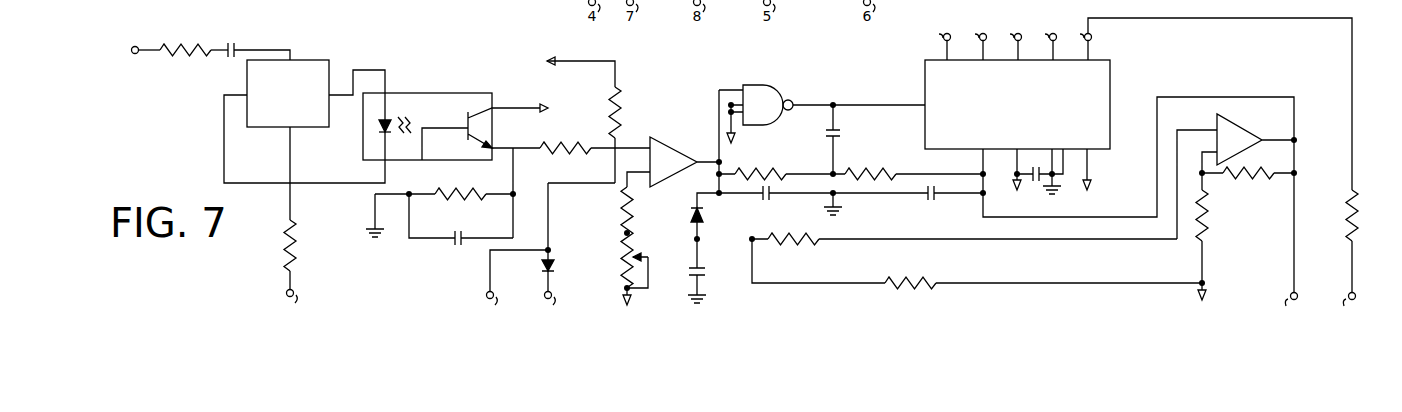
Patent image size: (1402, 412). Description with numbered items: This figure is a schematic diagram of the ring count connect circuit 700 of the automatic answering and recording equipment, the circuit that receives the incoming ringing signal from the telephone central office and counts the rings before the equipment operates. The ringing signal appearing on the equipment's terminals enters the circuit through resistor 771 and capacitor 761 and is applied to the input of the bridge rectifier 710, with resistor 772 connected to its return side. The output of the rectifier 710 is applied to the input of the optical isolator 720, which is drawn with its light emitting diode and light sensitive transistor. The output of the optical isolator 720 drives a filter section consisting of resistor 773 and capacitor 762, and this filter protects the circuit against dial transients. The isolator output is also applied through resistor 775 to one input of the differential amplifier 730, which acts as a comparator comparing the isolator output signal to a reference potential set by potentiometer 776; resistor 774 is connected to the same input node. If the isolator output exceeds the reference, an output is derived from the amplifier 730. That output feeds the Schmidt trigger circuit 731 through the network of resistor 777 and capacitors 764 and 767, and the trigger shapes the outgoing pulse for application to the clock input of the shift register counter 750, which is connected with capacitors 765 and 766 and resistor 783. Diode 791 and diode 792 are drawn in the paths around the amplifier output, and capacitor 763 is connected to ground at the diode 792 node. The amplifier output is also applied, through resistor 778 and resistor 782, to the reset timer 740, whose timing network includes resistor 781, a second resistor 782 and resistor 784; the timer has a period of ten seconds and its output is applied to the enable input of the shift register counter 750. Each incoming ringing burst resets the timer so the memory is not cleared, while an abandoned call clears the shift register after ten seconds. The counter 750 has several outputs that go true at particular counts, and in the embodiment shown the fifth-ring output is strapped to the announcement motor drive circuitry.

The ring count connect circuit 700 is at (739, 163).
The bridge rectifier 710 is at (318, 60).
The optical isolator 720 is at (442, 94).
The differential amplifier 730 is at (669, 148).
The Schmidt trigger circuit 731 is at (777, 88).
The reset timer 740 is at (1228, 121).
The shift register counter 750 is at (1112, 64).
The capacitor 761 is at (240, 41).
The capacitor 762 is at (462, 236).
The capacitor 763 is at (704, 249).
The capacitor 764 is at (773, 200).
The capacitor 765 is at (926, 197).
The capacitor 766 is at (1030, 184).
The capacitor 767 is at (846, 128).
The resistor 771 is at (184, 43).
The resistor 772 is at (300, 227).
The resistor 773 is at (454, 194).
The resistor 774 is at (626, 100).
The resistor 775 is at (562, 145).
The potentiometer 776 is at (620, 204).
The resistor 777 is at (760, 168).
The resistor 778 is at (808, 246).
The resistor 781 is at (1212, 228).
The resistor 782 is at (1240, 183).
The resistor 783 is at (867, 167).
The resistor 784 is at (1344, 217).
The diode 791 is at (543, 266).
The diode 792 is at (696, 217).